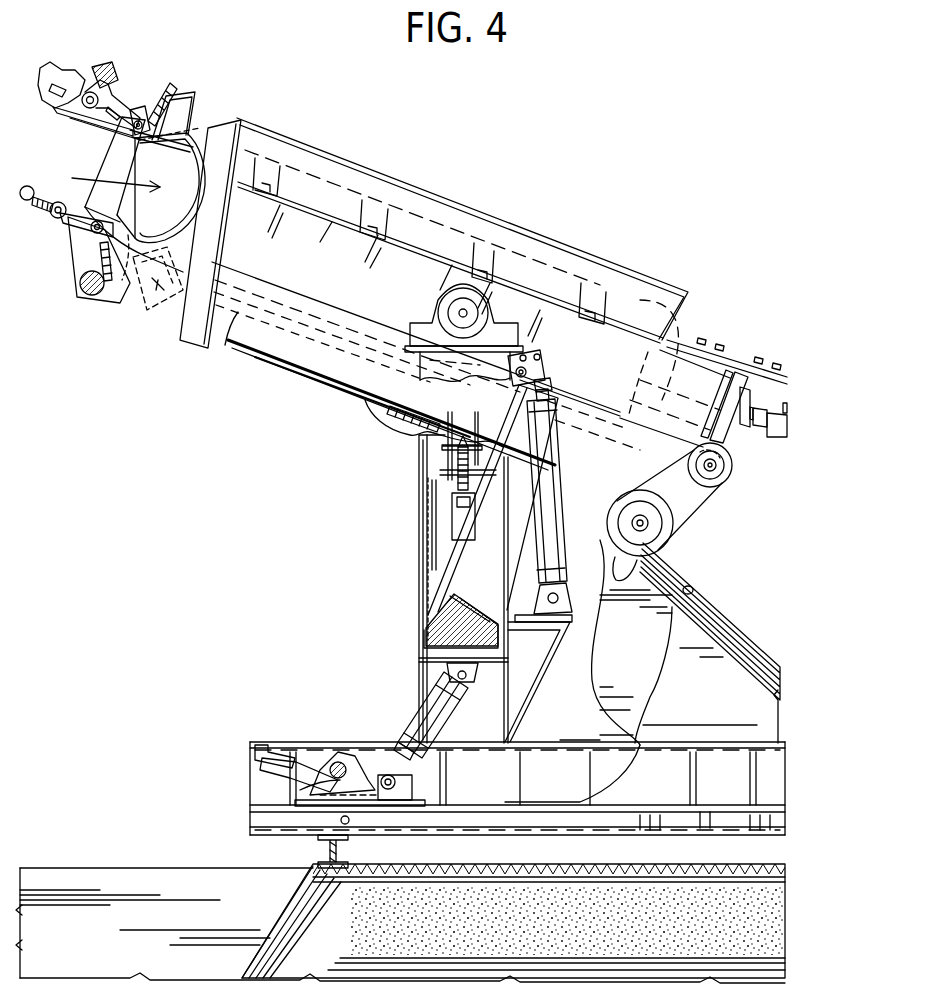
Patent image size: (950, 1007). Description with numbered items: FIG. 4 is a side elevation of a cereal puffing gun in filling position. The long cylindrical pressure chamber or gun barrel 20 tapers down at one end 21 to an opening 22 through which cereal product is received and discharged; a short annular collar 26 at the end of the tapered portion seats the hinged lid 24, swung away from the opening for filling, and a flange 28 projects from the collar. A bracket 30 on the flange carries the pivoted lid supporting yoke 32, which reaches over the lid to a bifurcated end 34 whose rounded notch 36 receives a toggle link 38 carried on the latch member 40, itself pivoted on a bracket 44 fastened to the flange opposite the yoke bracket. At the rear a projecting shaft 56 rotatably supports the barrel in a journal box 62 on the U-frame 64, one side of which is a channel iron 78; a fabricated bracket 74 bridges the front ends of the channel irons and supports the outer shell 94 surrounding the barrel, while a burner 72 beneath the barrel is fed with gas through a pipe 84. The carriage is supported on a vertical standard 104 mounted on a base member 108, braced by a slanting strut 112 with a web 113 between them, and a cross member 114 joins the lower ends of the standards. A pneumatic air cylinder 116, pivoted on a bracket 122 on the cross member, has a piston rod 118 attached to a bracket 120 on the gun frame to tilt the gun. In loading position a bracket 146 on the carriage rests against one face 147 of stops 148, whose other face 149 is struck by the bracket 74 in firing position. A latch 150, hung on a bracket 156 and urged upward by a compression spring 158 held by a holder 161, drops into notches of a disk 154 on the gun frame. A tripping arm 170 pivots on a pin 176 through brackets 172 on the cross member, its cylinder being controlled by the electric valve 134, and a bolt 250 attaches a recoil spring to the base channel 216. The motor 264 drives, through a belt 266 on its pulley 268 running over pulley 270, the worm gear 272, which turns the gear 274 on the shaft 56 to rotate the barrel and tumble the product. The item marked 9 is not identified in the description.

The section line 9 is at (148, 296).
The gun barrel 20 is at (325, 170).
The tapered end 21 is at (190, 136).
The opening 22 is at (155, 172).
The lid 24 is at (57, 113).
The annular collar 26 is at (103, 179).
The flange 28 is at (150, 105).
The bracket 30 is at (137, 118).
The lid supporting yoke 32 is at (87, 90).
The bifurcated end 34 is at (42, 91).
The rounded notch 36 is at (44, 68).
The toggle link 38 is at (60, 222).
The latch member 40 is at (24, 202).
The bracket 44 is at (90, 238).
The projecting shaft 56 is at (695, 340).
The journal box 62 is at (717, 370).
The U-frame 64 is at (425, 243).
The burner 72 is at (225, 345).
The fabricated bracket 74 is at (198, 347).
The channel iron 78 is at (320, 205).
The pipe 84 is at (375, 415).
The shell 94 is at (140, 280).
The standard 104 is at (424, 447).
The base member 108 is at (703, 743).
The strut 112 is at (722, 612).
The web 113 is at (722, 660).
The cross member 114 is at (512, 730).
The pneumatic air cylinder 116 is at (563, 570).
The piston rod 118 is at (560, 410).
The bracket 120 is at (545, 366).
The bracket 122 is at (560, 618).
The valve 134 is at (420, 704).
The bracket 146 is at (475, 552).
The face 147 is at (465, 592).
The stops 148 is at (455, 600).
The face 149 is at (425, 609).
The latch 150 is at (456, 478).
The disk 154 is at (372, 425).
The bracket 156 is at (442, 447).
The compression spring 158 is at (452, 498).
The holder 161 is at (455, 505).
The tripping arm 170 is at (262, 776).
The bracket 172 is at (254, 752).
The pin 176 is at (338, 760).
The base channel 216 is at (670, 812).
The bolt 250 is at (340, 825).
The motor 264 is at (660, 528).
The belt 266 is at (690, 512).
The pulley 268 is at (665, 535).
The pulley 270 is at (734, 465).
The worm gear 272 is at (732, 480).
The gear 274 is at (752, 392).